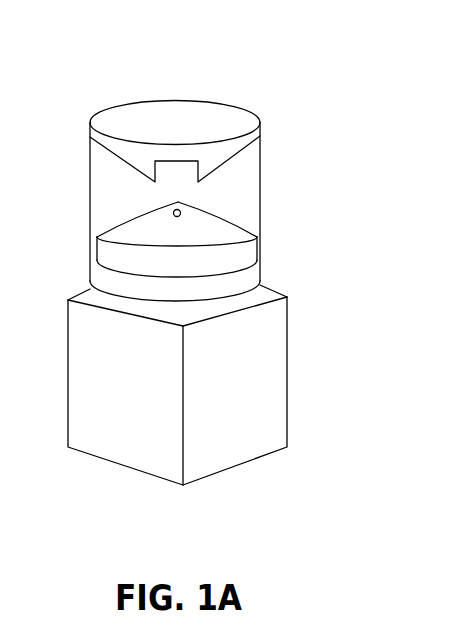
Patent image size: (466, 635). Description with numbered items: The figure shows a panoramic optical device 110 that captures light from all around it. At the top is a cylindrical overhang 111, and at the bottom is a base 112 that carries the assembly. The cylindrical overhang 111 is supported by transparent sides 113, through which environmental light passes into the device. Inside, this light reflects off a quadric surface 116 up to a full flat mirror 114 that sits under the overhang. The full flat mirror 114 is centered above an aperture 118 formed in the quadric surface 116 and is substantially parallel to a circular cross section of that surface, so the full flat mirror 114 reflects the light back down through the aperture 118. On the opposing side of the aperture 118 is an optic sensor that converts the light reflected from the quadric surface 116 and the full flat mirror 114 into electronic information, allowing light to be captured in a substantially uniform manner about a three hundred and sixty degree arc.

The panoramic optical device 110 is at (214, 289).
The cylindrical overhang 111 is at (97, 141).
The base 112 is at (177, 385).
The transparent sides 113 is at (262, 170).
The full flat mirror 114 is at (168, 167).
The quadric surface 116 is at (177, 239).
The aperture 118 is at (178, 210).